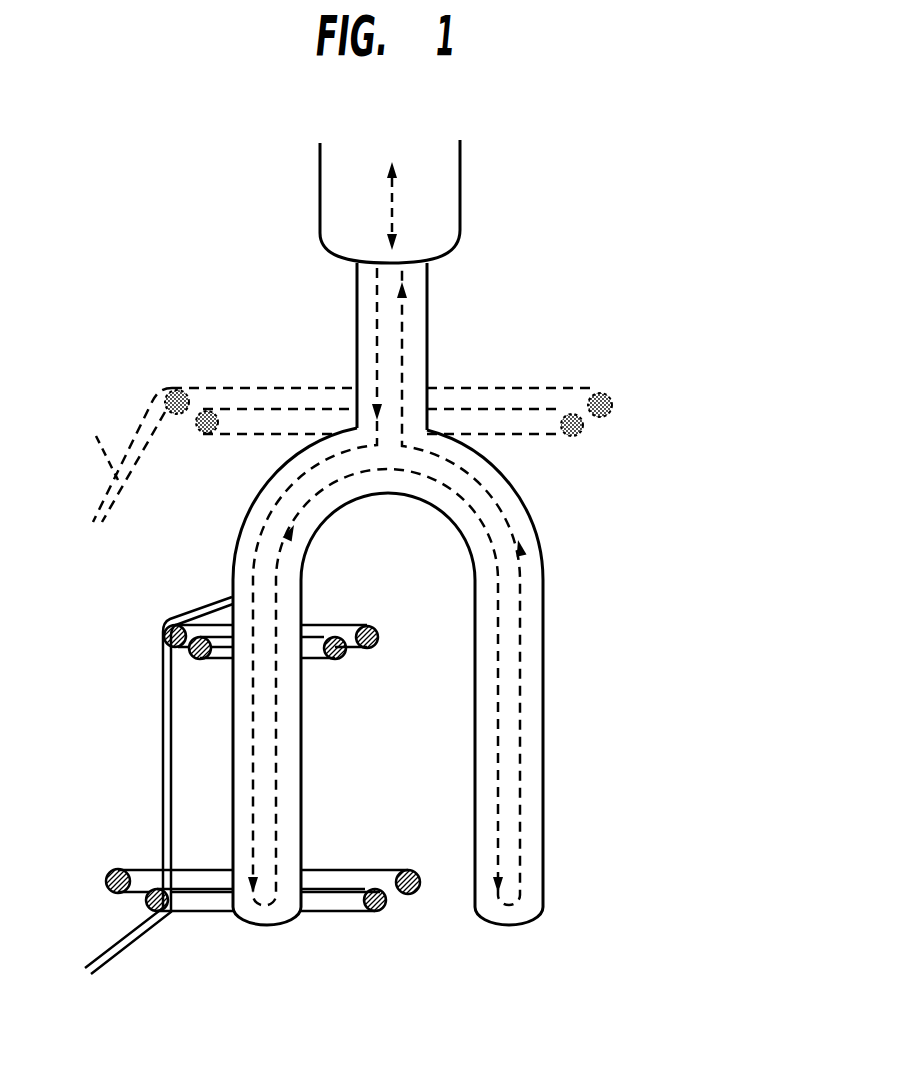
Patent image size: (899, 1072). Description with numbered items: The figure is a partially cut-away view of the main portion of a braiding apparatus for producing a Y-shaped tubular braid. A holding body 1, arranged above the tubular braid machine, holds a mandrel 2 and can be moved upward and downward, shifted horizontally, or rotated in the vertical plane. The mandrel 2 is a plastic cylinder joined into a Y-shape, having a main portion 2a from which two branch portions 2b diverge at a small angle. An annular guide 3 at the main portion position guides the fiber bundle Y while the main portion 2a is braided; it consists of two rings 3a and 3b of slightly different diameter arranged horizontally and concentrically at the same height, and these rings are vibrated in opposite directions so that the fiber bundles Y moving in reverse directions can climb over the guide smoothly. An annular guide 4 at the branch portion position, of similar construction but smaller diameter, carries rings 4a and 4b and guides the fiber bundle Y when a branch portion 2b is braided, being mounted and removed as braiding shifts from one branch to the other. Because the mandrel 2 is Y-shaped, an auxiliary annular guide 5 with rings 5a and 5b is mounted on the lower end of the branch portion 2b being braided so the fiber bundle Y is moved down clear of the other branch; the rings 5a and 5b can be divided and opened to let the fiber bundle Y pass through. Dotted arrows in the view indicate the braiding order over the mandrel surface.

The holding body 1 is at (460, 226).
The mandrel 2 is at (545, 533).
The mandrel main portion 2a is at (427, 357).
The mandrel branch portion 2b is at (301, 805).
The annular guide at the main portion position 3 is at (352, 422).
The ring 3a is at (254, 397).
The ring 3b is at (252, 436).
The annular guide at the branch portion position 4 is at (287, 650).
The ring 4a is at (343, 630).
The ring 4b is at (317, 655).
The auxiliary annular guide 5 is at (275, 897).
The ring 5a is at (382, 880).
The ring 5b is at (345, 904).
The fiber bundle Y is at (163, 785).